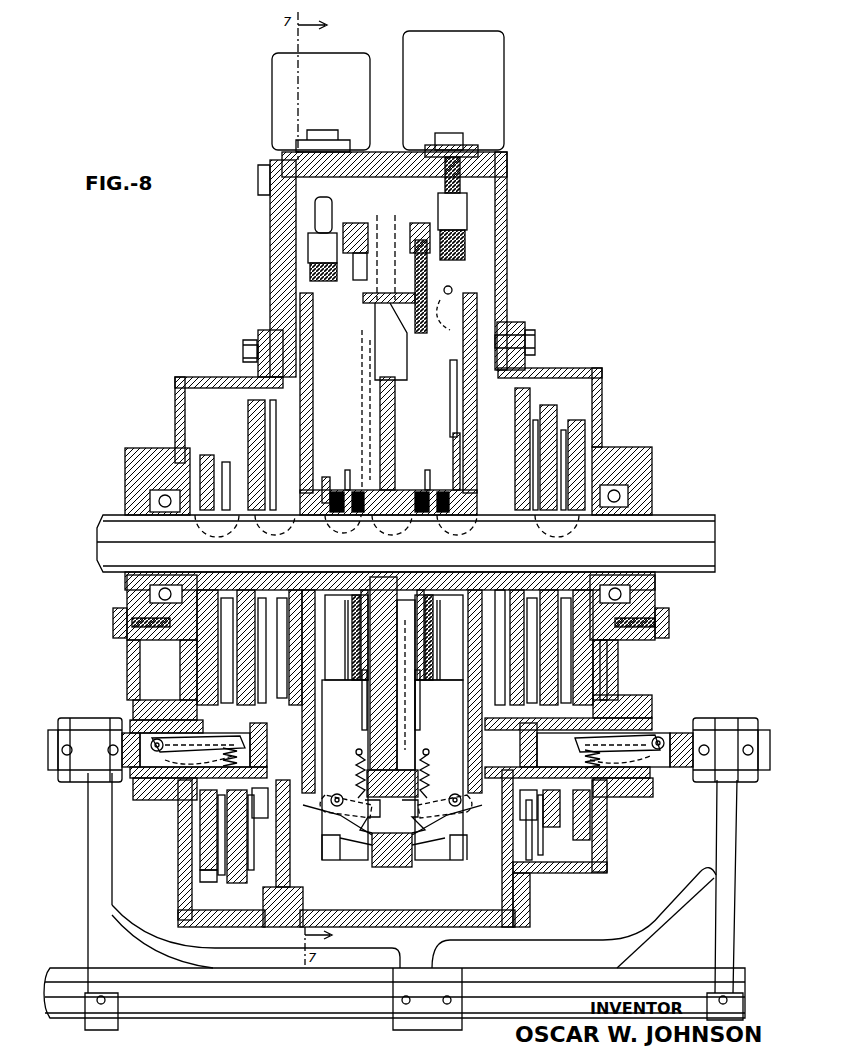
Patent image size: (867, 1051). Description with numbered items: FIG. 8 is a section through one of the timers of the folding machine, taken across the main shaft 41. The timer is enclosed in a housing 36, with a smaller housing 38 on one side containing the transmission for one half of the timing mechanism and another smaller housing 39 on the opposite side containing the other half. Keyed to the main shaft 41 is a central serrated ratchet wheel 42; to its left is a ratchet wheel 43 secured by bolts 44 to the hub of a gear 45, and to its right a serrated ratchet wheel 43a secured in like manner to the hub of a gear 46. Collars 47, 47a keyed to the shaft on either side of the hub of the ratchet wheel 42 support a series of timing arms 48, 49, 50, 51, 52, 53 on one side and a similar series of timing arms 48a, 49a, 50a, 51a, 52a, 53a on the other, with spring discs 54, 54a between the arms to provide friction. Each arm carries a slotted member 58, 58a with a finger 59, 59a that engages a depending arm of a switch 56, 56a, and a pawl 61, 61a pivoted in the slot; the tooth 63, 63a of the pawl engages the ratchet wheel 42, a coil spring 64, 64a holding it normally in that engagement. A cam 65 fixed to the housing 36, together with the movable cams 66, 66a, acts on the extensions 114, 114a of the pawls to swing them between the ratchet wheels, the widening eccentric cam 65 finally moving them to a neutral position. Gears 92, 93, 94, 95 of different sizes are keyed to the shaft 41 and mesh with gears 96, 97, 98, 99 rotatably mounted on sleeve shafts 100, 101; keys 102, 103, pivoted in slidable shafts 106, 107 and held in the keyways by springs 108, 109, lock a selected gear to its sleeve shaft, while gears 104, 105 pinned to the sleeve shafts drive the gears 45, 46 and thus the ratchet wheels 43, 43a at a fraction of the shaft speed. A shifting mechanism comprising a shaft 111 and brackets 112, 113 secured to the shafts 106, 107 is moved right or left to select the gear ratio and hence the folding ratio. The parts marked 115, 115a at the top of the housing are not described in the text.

The housing 36 is at (388, 150).
The smaller housing 38 is at (185, 377).
The smaller housing 39 is at (580, 368).
The main shaft 41 is at (680, 515).
The central serrated ratchet wheel 42 is at (385, 395).
The ratchet wheel 43 is at (300, 300).
The serrated ratchet wheel 43a is at (478, 300).
The bolts 44 is at (300, 527).
The gear 45 is at (250, 400).
The gear 46 is at (525, 390).
The collar 47 is at (355, 490).
The collar 47a is at (445, 490).
The timing arm 48 is at (325, 475).
The timing arm 48a is at (452, 375).
The timing arm 49 is at (352, 615).
The timing arm 49a is at (433, 612).
The timing arm 50 is at (360, 625).
The timing arm 50a is at (424, 630).
The timing arm 51 is at (346, 650).
The timing arm 51a is at (439, 640).
The timing arm 52 is at (362, 620).
The timing arm 52a is at (415, 680).
The timing arm 53 is at (361, 700).
The timing arm 53a is at (420, 730).
The spring disc 54 is at (347, 488).
The spring disc 54a is at (428, 488).
The switch 56 is at (282, 75).
The cylinder 56a is at (488, 62).
The slotted member 58 is at (345, 727).
The sleeve 58a is at (439, 727).
The finger 59 is at (333, 862).
The foot 59a is at (458, 862).
The pawl 61 is at (337, 814).
The pawl 61a is at (447, 814).
The tooth 63 is at (378, 816).
The fork 63a is at (418, 860).
The coil spring 64 is at (357, 772).
The spring 64a is at (429, 772).
The cam 65 is at (392, 867).
The cam 66 is at (355, 222).
The cam 66a is at (418, 222).
The gear 92 is at (180, 455).
The gear 93 is at (222, 460).
The gear 94 is at (548, 405).
The gear 95 is at (578, 420).
The gear 96 is at (208, 866).
The gear 97 is at (235, 884).
The gear 98 is at (553, 827).
The gear 99 is at (582, 833).
The sleeve shaft 100 is at (175, 800).
The sleeve shaft 101 is at (620, 800).
The key 102 is at (240, 741).
The key 103 is at (585, 740).
The gear 104 is at (258, 818).
The gear 105 is at (528, 818).
The slidable shaft 106 is at (148, 735).
The slidable shaft 107 is at (655, 733).
The spring 108 is at (238, 756).
The spring 109 is at (585, 758).
The shaft 111 is at (258, 1020).
The bracket 112 is at (86, 930).
The bracket 113 is at (716, 930).
The extension 114 is at (365, 840).
The extension 114a is at (430, 840).
The bolt 115 is at (310, 215).
The bolt 115a is at (455, 208).